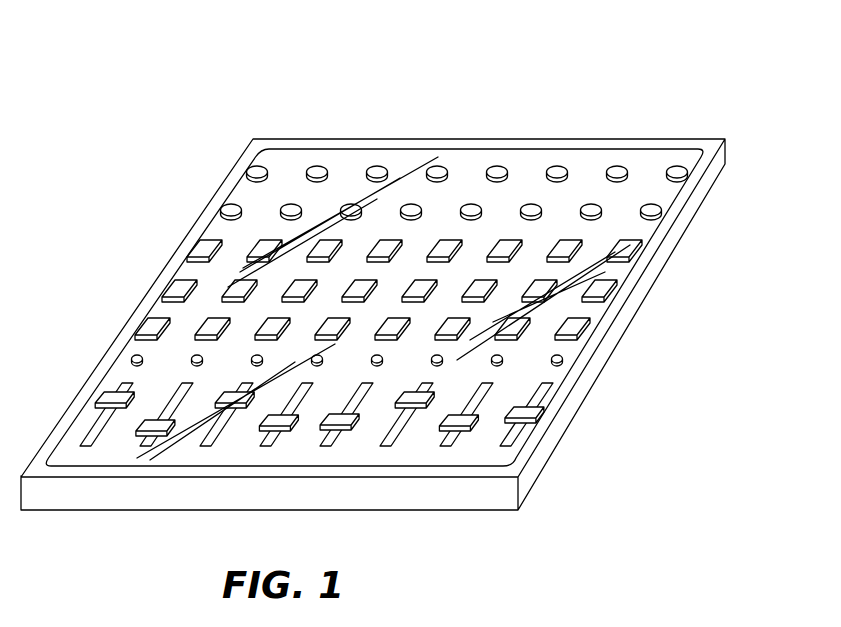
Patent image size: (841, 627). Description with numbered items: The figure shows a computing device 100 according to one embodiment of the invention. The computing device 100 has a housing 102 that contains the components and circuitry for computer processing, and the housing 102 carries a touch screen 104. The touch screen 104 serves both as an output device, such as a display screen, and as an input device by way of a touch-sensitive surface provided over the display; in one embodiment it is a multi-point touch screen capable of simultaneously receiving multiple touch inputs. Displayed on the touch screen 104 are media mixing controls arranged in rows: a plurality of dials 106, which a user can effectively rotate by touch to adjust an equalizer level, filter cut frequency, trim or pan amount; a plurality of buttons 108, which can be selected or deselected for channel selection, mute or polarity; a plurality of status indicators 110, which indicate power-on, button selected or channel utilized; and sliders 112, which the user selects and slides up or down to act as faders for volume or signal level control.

The computing device 100 is at (414, 274).
The housing 102 is at (630, 333).
The touch screen 104 is at (295, 168).
The dials 106 is at (654, 207).
The buttons 108 is at (590, 310).
The status indicators 110 is at (566, 357).
The sliders 112 is at (533, 410).